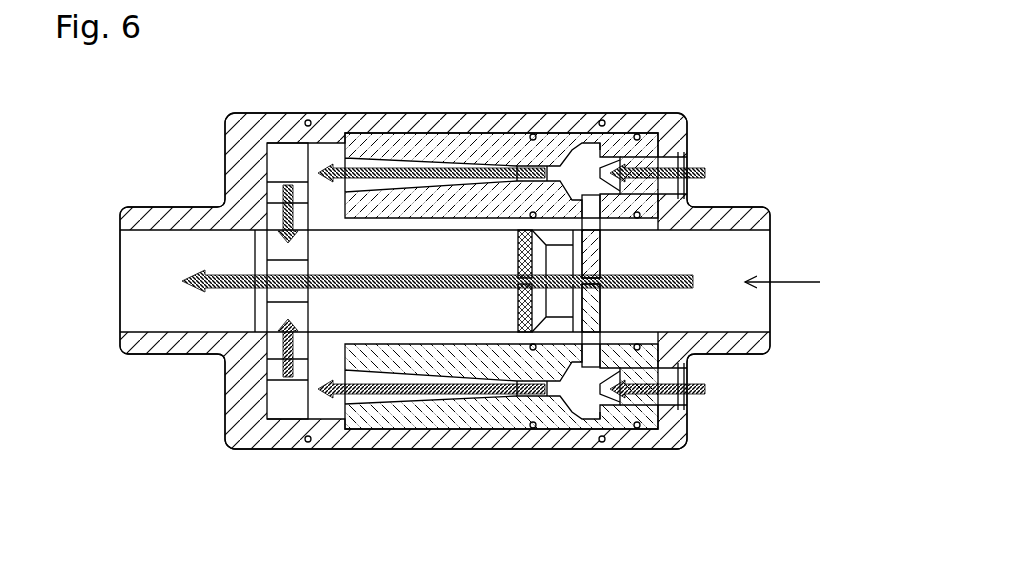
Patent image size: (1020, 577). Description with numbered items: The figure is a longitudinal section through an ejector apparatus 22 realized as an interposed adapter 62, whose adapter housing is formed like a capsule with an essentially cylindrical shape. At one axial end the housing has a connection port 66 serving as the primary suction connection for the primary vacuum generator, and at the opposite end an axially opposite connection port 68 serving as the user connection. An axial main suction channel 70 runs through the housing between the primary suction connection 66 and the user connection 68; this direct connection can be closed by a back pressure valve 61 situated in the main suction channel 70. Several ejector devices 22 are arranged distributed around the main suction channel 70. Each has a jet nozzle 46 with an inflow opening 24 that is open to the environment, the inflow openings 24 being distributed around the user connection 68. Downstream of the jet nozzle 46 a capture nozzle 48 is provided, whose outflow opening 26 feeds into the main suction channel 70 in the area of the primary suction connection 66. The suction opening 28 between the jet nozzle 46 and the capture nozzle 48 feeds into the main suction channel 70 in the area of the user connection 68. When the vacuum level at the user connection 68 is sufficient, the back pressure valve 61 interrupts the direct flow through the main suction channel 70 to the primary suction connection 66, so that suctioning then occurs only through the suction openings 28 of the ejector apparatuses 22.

The ejector apparatus 22 is at (477, 124).
The inflow opening 24 is at (700, 160).
The outflow opening 26 is at (325, 152).
The suction opening 28 is at (587, 232).
The jet nozzle 46 is at (620, 145).
The capture nozzle 48 is at (415, 143).
The back pressure valve 61 is at (543, 322).
The interposed adapter 62 is at (697, 86).
The connection port 66 is at (165, 283).
The connection port 68 is at (825, 285).
The main suction channel 70 is at (342, 260).